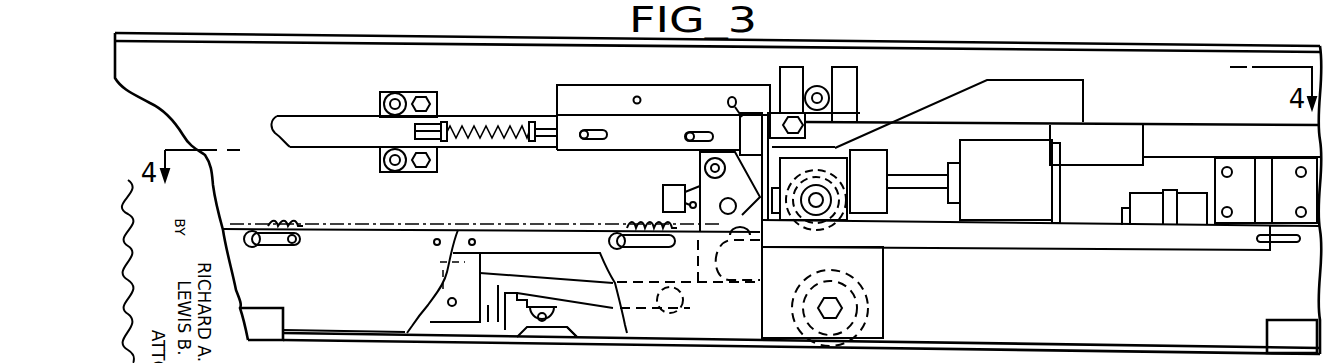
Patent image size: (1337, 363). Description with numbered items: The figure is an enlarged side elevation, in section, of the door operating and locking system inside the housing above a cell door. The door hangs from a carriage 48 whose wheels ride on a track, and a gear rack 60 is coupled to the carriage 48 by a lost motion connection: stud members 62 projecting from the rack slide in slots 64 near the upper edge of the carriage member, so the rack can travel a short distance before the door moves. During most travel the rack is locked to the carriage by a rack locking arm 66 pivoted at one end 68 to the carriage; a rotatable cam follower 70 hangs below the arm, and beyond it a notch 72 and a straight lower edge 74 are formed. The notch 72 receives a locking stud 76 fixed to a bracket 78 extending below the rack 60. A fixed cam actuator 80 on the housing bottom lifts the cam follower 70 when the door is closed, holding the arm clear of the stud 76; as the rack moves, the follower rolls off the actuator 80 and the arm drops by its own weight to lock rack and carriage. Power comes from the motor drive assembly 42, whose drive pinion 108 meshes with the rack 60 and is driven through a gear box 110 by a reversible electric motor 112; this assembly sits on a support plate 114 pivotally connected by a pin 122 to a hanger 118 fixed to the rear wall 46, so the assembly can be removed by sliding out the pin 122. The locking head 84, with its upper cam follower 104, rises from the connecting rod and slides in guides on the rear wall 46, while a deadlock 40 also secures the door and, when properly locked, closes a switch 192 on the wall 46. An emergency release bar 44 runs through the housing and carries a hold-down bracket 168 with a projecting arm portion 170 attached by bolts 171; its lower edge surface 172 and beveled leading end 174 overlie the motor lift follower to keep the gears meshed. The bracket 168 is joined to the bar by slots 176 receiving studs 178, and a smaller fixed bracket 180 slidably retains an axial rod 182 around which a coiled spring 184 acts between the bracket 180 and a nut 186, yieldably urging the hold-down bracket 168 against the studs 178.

The deadlock 40 is at (700, 180).
The motor drive assembly 42 is at (1036, 262).
The emergency release bar 44 is at (330, 115).
The rear wall 46 is at (1168, 90).
The carriage 48 is at (888, 305).
The gear rack 60 is at (652, 232).
The stud members 62 is at (253, 248).
The slots 64 is at (293, 245).
The rack locking arm 66 is at (498, 322).
The pivotal end 68 is at (668, 313).
The cam follower 70 is at (548, 324).
The notch 72 is at (517, 300).
The lower edge 74 is at (488, 305).
The locking stud 76 is at (448, 302).
The bracket 78 is at (482, 260).
The cam actuator 80 is at (577, 335).
The locking head 84 is at (822, 118).
The cam follower 104 is at (830, 95).
The drive pinion 108 is at (803, 223).
The gear box 110 is at (872, 198).
The reversible electric motor 112 is at (1013, 202).
The support plate 114 is at (1135, 246).
The hanger 118 is at (1262, 177).
The pin 122 is at (1288, 245).
The hold-down bracket 168 is at (587, 96).
The projecting arm portion 170 is at (757, 98).
The bolts 171 is at (639, 97).
The lower edge surface 172 is at (715, 104).
The leading end 174 is at (780, 108).
The slots 176 is at (608, 134).
The stud 178 is at (586, 131).
The fixed bracket 180 is at (444, 124).
The axial rod 182 is at (542, 142).
The coiled spring 184 is at (472, 142).
The nut 186 is at (532, 122).
The switch 192 is at (663, 196).